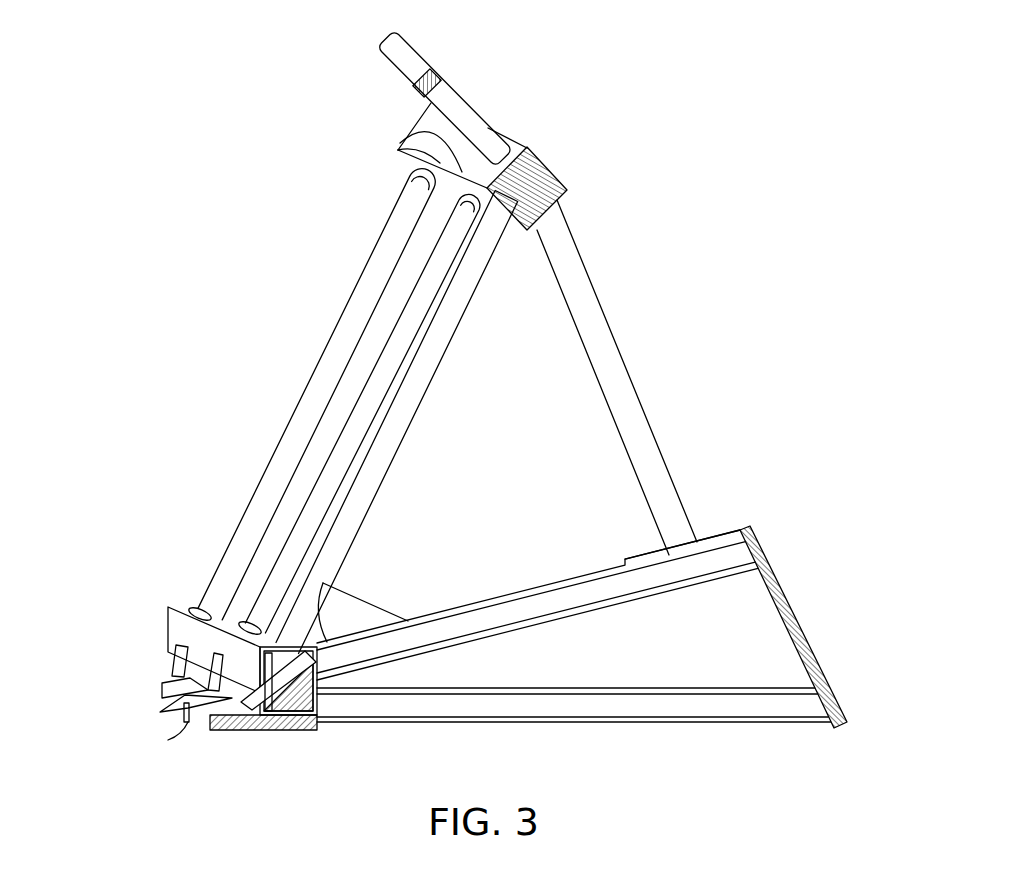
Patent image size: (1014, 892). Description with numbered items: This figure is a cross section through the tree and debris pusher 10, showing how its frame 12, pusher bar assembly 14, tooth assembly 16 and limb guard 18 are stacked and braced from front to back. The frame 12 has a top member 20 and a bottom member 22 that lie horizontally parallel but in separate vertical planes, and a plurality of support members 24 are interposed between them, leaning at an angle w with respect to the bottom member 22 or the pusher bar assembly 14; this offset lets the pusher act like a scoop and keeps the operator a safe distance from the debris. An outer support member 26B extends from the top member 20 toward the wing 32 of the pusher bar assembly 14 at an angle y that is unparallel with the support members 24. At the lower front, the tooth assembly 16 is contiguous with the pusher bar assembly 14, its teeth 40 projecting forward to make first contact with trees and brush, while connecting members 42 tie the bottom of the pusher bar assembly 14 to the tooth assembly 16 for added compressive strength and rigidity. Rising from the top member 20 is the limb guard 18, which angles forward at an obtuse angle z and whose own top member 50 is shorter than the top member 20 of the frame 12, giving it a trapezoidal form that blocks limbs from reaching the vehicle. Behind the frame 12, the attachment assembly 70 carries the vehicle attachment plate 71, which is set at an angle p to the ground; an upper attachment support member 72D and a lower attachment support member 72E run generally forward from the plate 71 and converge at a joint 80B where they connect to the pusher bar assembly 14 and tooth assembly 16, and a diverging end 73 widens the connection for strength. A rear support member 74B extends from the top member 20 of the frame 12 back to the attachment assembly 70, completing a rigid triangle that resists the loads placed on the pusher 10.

The pusher 10 is at (558, 105).
The frame 12 is at (575, 238).
The pusher bar assembly 14 is at (300, 603).
The tooth assembly 16 is at (188, 715).
The limb guard 18 is at (447, 73).
The top member 20 is at (395, 147).
The bottom member 22 is at (285, 716).
The support members 24 is at (462, 318).
The outer support member 26B is at (350, 303).
The wing 32 is at (178, 607).
The teeth 40 is at (195, 722).
The connecting members 42 is at (175, 688).
The top member of the limb guard 50 is at (410, 82).
The attachment assembly 70 is at (762, 550).
The vehicle attachment plate 71 is at (800, 631).
The upper attachment support member 72D is at (513, 593).
The lower attachment support member 72E is at (632, 687).
The diverging ends 73 is at (640, 555).
The rear support member 74B is at (596, 291).
The joint 80B is at (232, 731).
The angle z is at (398, 150).
The angle y is at (243, 600).
The angle w is at (330, 627).
The angle p is at (830, 688).